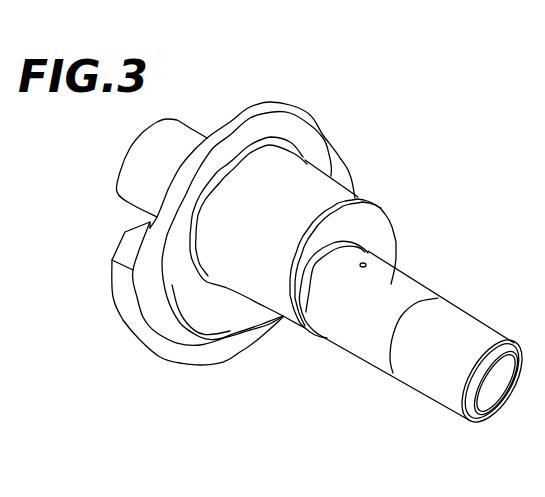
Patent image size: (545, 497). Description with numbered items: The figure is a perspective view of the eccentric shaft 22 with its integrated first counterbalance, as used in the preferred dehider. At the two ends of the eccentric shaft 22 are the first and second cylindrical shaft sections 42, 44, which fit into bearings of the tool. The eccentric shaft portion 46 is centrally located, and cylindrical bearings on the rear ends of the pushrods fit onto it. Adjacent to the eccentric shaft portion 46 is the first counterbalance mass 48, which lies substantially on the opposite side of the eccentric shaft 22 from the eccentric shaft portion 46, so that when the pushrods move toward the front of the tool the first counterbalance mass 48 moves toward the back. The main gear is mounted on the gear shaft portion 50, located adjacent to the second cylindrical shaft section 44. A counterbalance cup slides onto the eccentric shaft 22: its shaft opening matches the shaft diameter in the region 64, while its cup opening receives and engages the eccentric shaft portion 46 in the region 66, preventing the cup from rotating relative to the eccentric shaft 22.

The eccentric shaft 22 is at (305, 368).
The first cylindrical shaft section 42 is at (141, 170).
The second cylindrical shaft section 44 is at (440, 382).
The eccentric shaft portion 46 is at (295, 173).
The first counterbalance mass 48 is at (168, 357).
The gear shaft portion 50 is at (422, 292).
The region of the eccentric shaft 64 is at (388, 283).
The region of the eccentric shaft portion 66 is at (347, 193).